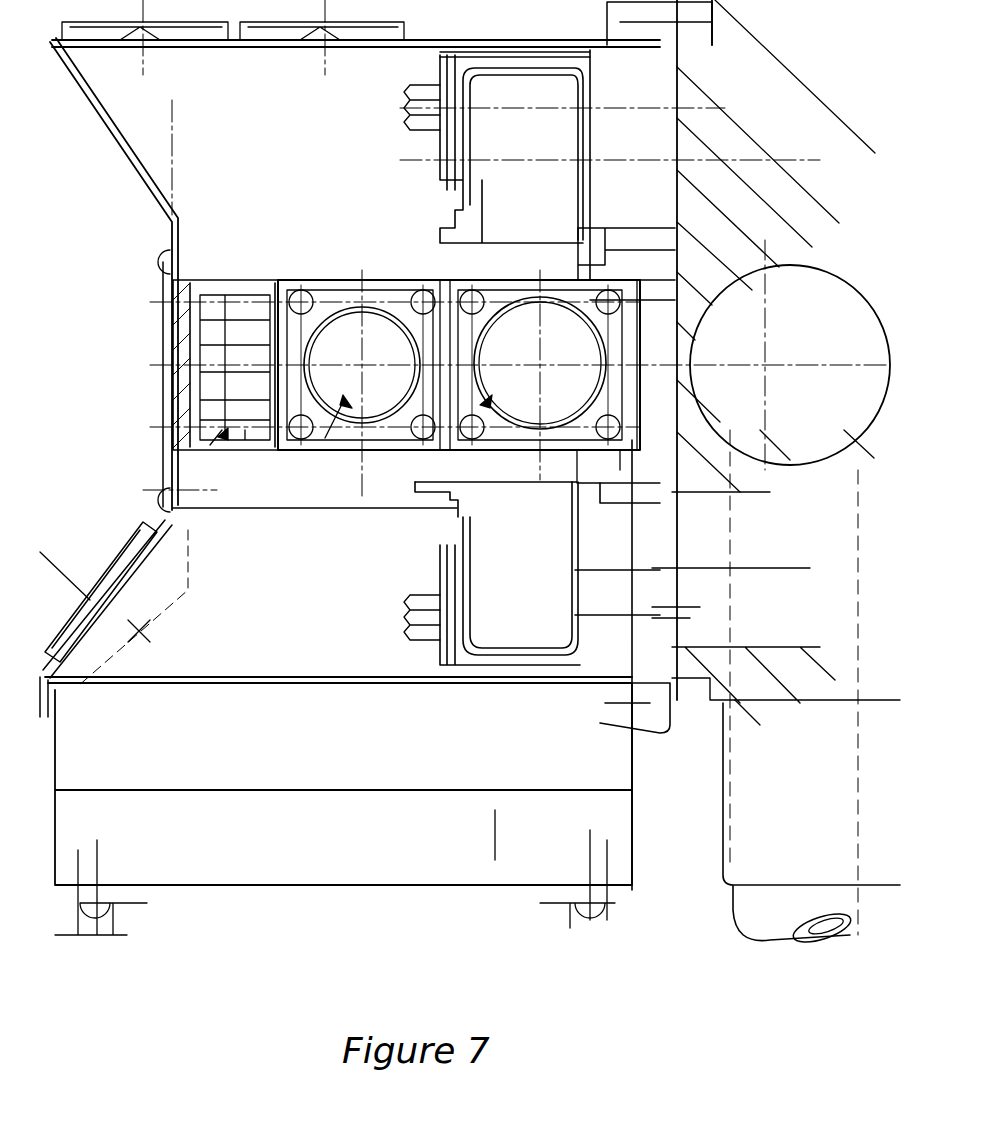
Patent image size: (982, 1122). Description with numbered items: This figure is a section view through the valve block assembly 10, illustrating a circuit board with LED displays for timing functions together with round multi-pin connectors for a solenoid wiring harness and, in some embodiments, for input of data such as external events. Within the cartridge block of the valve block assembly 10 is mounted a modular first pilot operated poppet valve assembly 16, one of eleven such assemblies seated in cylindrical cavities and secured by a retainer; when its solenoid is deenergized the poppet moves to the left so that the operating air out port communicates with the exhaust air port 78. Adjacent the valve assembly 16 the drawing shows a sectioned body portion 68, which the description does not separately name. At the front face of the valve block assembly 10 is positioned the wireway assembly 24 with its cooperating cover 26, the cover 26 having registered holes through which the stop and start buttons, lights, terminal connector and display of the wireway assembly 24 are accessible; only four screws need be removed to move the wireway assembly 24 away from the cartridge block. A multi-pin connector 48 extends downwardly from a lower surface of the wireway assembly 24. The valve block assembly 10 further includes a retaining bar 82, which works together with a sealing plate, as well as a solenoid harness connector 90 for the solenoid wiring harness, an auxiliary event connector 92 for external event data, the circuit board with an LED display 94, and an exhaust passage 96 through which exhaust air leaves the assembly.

The valve block assembly 10 is at (265, 932).
The modular first pilot operated poppet valve assembly 16 is at (552, 668).
The wireway assembly 24 is at (343, 282).
The cover 26 is at (96, 128).
The multi-pin connector 48 is at (402, 888).
The hatched support block 68 is at (782, 300).
The exhaust air port 78 is at (487, 181).
The retaining bar 82 is at (586, 234).
The solenoid harness connector 90 is at (507, 317).
The auxiliary event connector 92 is at (328, 327).
The circuit board with an LED display 94 is at (236, 296).
The exhaust passage 96 is at (744, 903).